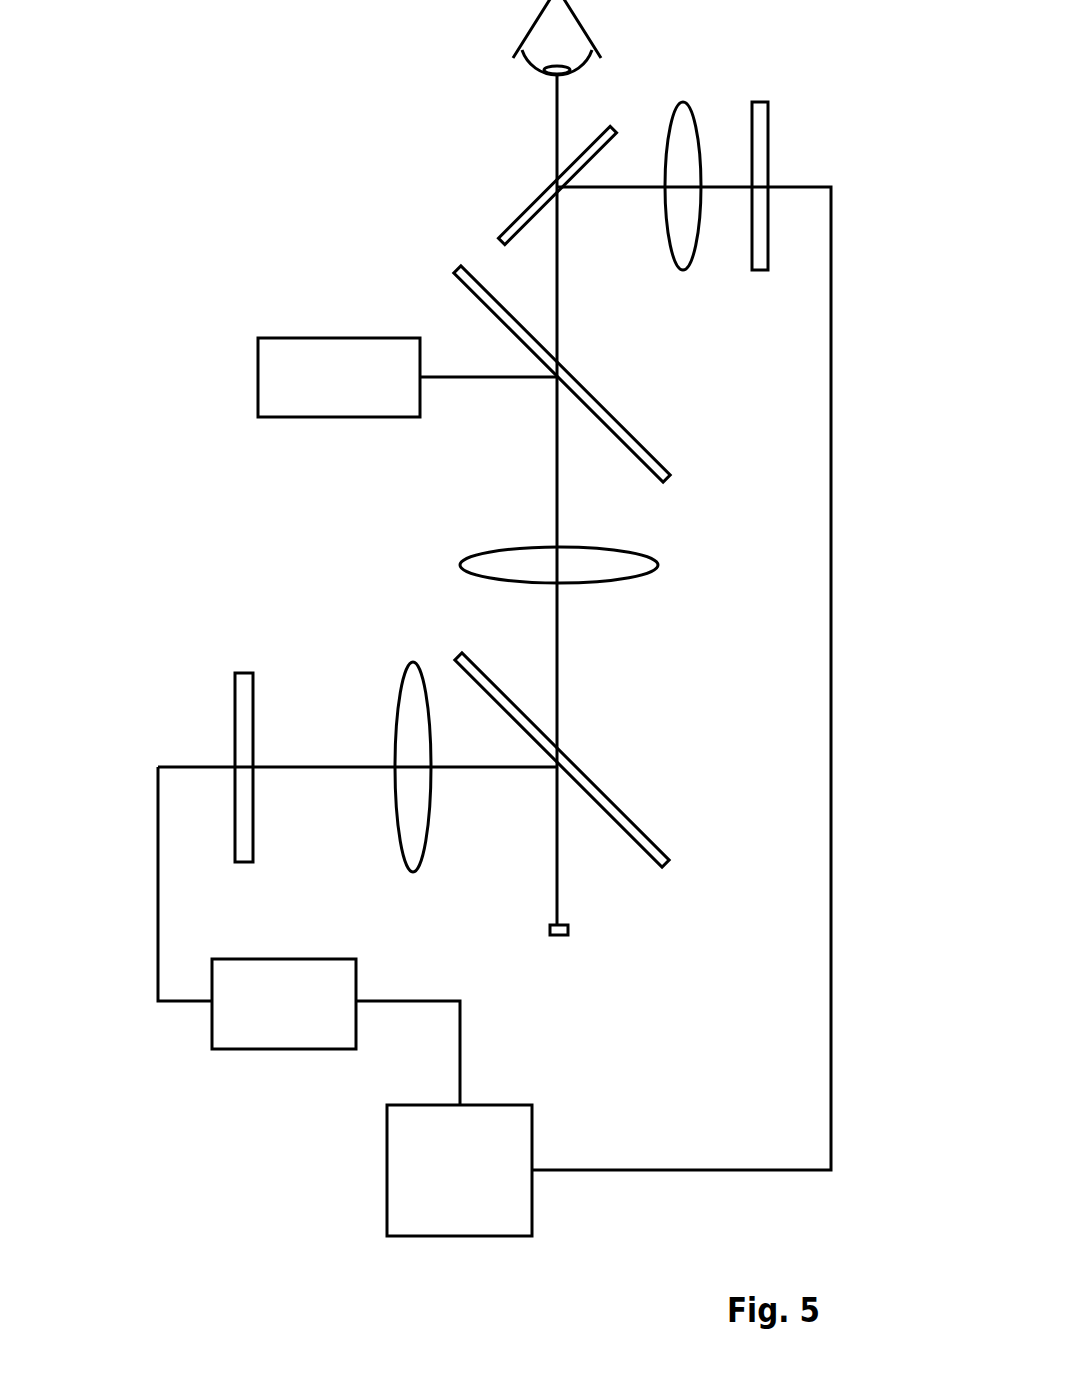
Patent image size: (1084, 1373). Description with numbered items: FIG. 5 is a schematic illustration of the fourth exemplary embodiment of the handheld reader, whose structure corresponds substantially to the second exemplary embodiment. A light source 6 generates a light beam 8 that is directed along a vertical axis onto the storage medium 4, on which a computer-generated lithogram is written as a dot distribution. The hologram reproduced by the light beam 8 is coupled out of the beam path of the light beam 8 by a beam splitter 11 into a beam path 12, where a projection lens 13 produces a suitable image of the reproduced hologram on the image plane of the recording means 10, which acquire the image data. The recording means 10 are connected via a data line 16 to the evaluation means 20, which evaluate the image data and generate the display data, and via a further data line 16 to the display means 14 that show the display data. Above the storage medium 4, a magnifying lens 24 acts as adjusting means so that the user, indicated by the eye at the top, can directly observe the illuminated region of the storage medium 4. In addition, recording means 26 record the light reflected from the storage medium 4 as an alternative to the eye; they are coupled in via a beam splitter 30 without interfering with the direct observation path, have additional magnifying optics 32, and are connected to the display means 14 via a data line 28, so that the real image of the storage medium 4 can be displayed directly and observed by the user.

The storage medium 4 is at (560, 937).
The light source 6 is at (317, 350).
The light beam 8 is at (473, 378).
The recording means 10 is at (238, 707).
The beam splitter 11 is at (603, 795).
The beam path 12 is at (313, 768).
The projection lens 13 is at (413, 848).
The display means 14 is at (458, 1223).
The data line 16 is at (157, 940).
The evaluation means 20 is at (266, 1032).
The magnifying lens 24 is at (653, 567).
The recording means 26 is at (760, 142).
The data line 28 is at (832, 557).
The beam splitter 30 is at (523, 207).
The magnifying optics 32 is at (680, 123).